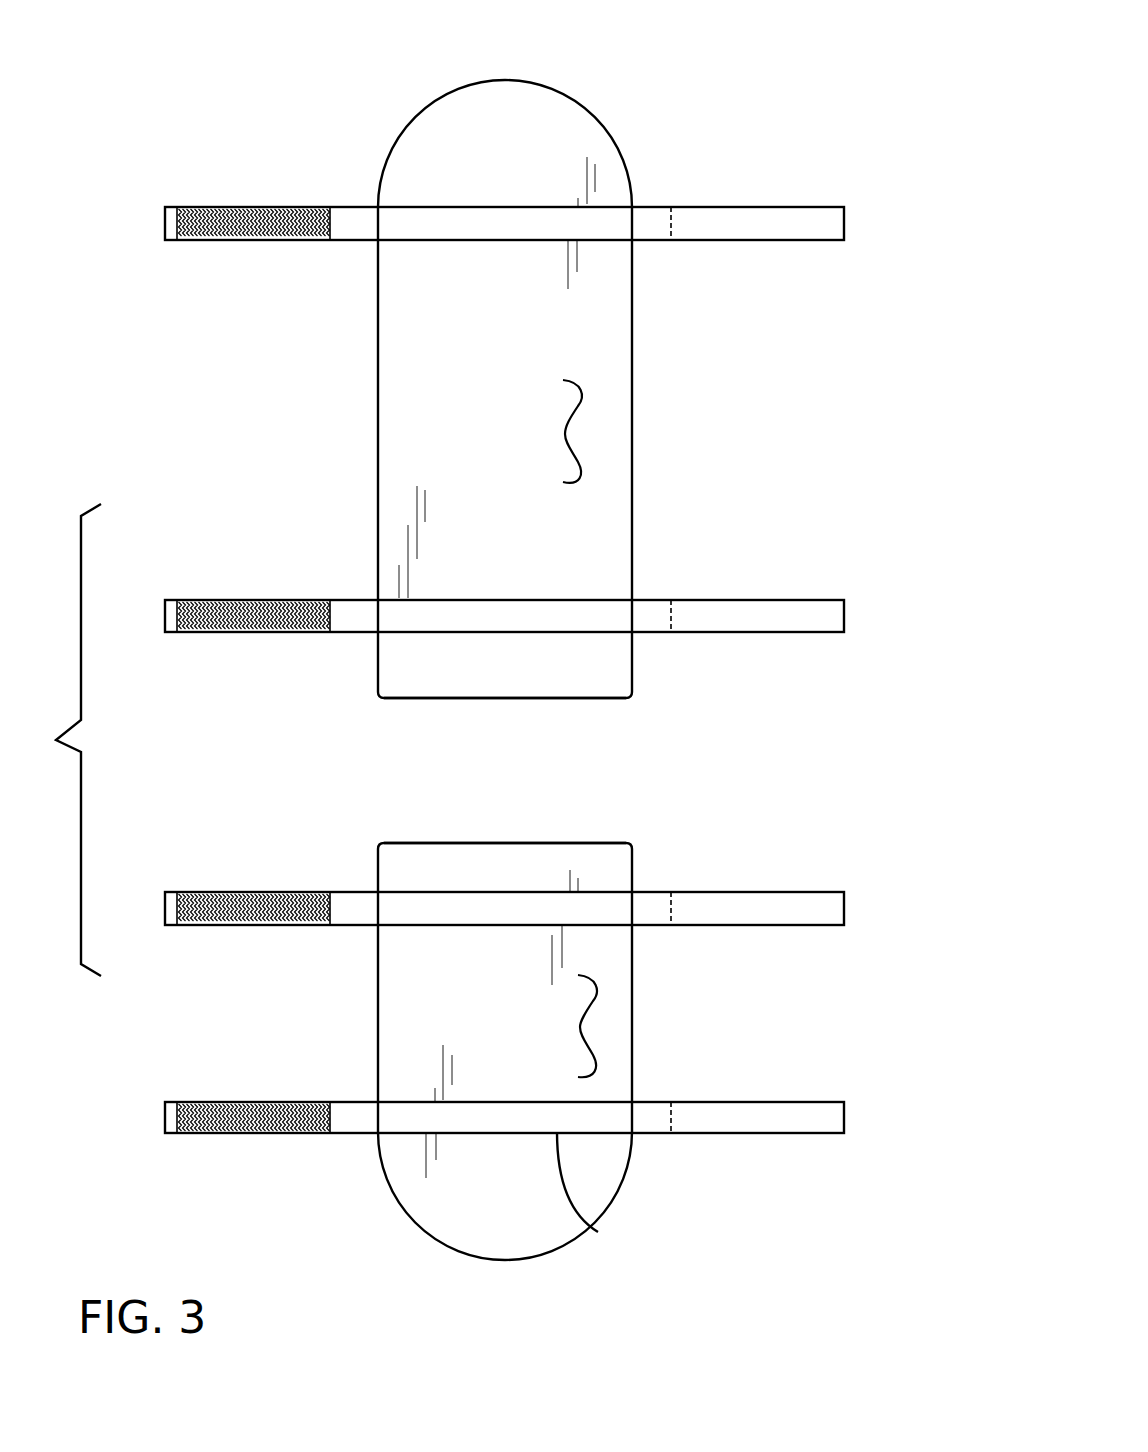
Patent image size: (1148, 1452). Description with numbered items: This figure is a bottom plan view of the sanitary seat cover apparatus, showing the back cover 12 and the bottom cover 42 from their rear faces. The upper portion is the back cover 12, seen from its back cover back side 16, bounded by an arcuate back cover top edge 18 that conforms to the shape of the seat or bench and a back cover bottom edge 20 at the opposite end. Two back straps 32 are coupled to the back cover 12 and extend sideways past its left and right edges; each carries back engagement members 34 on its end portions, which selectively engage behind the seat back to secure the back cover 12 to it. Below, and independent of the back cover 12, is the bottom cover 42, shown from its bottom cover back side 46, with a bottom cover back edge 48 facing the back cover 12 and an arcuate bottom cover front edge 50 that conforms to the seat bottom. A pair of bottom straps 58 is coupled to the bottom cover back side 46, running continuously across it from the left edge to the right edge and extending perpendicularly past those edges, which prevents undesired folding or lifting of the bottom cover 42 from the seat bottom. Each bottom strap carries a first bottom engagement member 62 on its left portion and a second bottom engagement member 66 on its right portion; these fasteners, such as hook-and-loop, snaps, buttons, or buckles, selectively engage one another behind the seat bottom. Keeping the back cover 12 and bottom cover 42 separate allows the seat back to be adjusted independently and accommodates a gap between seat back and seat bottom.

The back cover 12 is at (571, 393).
The back cover back side 16 is at (565, 434).
The back cover top edge 18 is at (512, 85).
The back cover bottom edge 20 is at (487, 698).
The back straps 32 is at (504, 419).
The back engagement members 34 is at (240, 600).
The bottom cover 42 is at (561, 1035).
The bottom cover back side 46 is at (580, 1027).
The bottom cover back edge 48 is at (486, 842).
The bottom cover front edge 50 is at (500, 1262).
The bottom straps 58 is at (598, 1232).
The first bottom engagement member 62 is at (250, 1133).
The second bottom engagement member 66 is at (520, 1057).